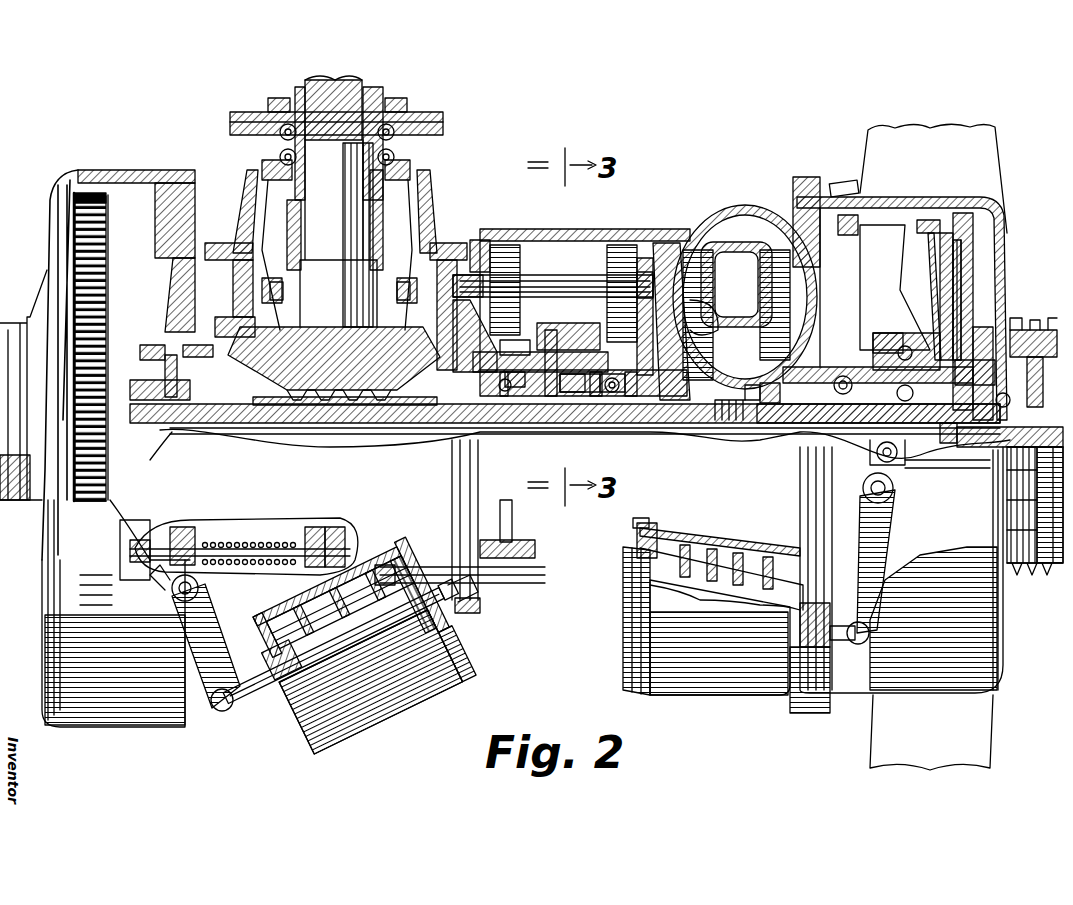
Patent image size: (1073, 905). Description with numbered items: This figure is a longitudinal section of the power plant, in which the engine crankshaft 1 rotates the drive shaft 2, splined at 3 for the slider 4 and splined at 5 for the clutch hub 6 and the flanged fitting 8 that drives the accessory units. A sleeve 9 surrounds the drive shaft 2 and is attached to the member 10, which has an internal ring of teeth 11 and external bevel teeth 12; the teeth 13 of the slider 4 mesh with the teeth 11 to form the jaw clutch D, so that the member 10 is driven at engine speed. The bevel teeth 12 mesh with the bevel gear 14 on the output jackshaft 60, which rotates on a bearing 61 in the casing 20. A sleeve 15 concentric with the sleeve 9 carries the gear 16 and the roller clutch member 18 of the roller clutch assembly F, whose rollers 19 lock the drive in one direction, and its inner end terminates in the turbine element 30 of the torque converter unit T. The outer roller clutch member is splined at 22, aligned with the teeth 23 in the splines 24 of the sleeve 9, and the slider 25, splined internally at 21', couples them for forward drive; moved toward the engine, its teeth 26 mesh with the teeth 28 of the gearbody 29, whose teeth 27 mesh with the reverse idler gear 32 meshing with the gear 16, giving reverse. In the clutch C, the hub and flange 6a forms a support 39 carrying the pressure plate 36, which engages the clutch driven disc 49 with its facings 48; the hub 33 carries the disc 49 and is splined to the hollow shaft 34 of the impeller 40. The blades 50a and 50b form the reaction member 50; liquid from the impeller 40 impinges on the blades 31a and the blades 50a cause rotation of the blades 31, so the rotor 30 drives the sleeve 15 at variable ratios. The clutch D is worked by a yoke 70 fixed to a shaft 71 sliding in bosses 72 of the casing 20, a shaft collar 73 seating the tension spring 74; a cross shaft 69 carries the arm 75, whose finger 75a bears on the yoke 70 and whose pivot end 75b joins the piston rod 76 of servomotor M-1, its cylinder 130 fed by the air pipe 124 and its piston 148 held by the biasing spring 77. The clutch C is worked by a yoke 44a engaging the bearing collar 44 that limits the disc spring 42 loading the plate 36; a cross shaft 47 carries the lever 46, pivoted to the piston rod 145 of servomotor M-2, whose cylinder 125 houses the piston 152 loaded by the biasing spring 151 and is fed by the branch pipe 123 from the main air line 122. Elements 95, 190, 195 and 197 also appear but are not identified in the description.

The clutch D is at (123, 160).
The engine crankshaft 1 is at (70, 415).
The drive shaft 2 is at (360, 435).
The spline 3 is at (163, 447).
The slider 4 is at (128, 392).
The spline 5 is at (992, 447).
The clutch hub 6 is at (968, 445).
The hub and flange 6a is at (975, 320).
The flanged fitting 8 is at (1040, 330).
The sleeve 9 is at (400, 428).
The member 10 is at (585, 443).
The internal ring of teeth 11 is at (170, 350).
The external bevel teeth 12 is at (246, 522).
The teeth 13 is at (155, 370).
The bevel gear 14 is at (318, 345).
The sleeve 15 is at (508, 432).
The gear 16 is at (618, 400).
The roller clutch member 18 is at (600, 400).
The rollers 19 is at (553, 425).
The casing 20 is at (470, 245).
The internal spline teeth 21' is at (541, 345).
The external splines 22 is at (572, 400).
The teeth 23 is at (475, 336).
The splines 24 is at (530, 340).
The slider 25 is at (572, 335).
The teeth 26 is at (562, 350).
The teeth 27 is at (622, 252).
The teeth 28 is at (502, 252).
The gearbody 29 is at (520, 272).
The turbine element 30 is at (712, 425).
The blades 31 is at (718, 280).
The blades 31a is at (776, 270).
The reverse idler gear 32 is at (638, 272).
The hub 33 is at (962, 352).
The hollow shaft 34 is at (790, 428).
The pressure plate 36 is at (965, 215).
The support 39 is at (935, 220).
The impeller 40 is at (768, 425).
The disc spring 42 is at (928, 292).
The bearing collar 44 is at (876, 353).
The yoke 44a is at (882, 333).
The lever 46 is at (870, 565).
The cross shaft 47 is at (885, 492).
The facings 48 is at (960, 252).
The clutch driven disc 49 is at (952, 280).
The reaction member 50 is at (728, 196).
The converter blades 50a is at (750, 225).
The converter blades 50b is at (692, 260).
The output jackshaft 60 is at (355, 200).
The bearing 61 is at (395, 152).
The cross shaft 69 is at (180, 590).
The yoke 70 is at (112, 560).
The shaft 71 is at (190, 527).
The bosses 72 is at (216, 522).
The shaft collar 73 is at (286, 527).
The tension spring 74 is at (268, 522).
The arm 75 is at (210, 690).
The finger 75a is at (165, 570).
The pivot end 75b is at (225, 712).
The piston rod 76 is at (262, 682).
The biasing spring 77 is at (268, 636).
The pin 95 is at (592, 350).
The main air line 122 is at (512, 520).
The branch pipe 123 is at (560, 570).
The air pipe 124 is at (480, 585).
The servomotor cylinder 125 is at (688, 672).
The cylinder 130 is at (378, 705).
The piston rod 145 is at (857, 648).
The piston 148 is at (432, 622).
The biasing spring 151 is at (730, 556).
The piston 152 is at (640, 547).
The bolt 190 is at (866, 455).
The washer 195 is at (745, 425).
The spacer 197 is at (668, 400).
The clutch C is at (998, 199).
The torque converter unit T is at (704, 207).
The roller clutch assembly F is at (550, 227).
The servomotor M-1 is at (352, 720).
The servomotor M-2 is at (745, 680).